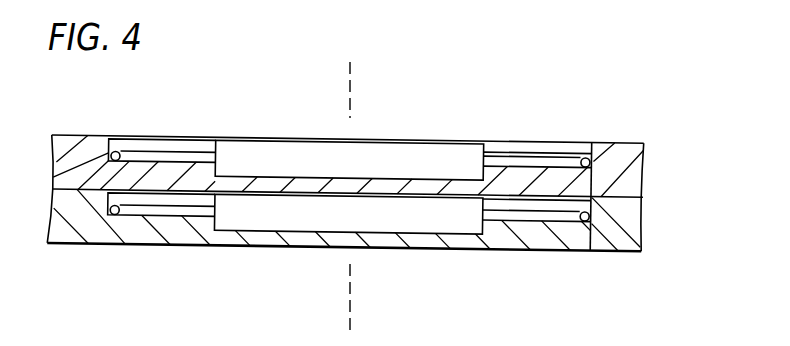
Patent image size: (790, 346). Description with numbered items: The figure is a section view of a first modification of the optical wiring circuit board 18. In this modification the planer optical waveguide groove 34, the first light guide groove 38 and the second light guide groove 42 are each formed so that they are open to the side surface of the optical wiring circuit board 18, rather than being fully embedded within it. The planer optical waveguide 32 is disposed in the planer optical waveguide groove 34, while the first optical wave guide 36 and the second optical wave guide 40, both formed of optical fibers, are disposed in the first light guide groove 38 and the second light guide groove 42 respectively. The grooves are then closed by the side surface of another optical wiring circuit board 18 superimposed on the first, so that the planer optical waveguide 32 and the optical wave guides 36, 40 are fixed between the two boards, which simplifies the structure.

The optical wiring circuit board 18 is at (634, 170).
The planer optical waveguide 32 is at (446, 150).
The planer optical waveguide groove 34 is at (281, 189).
The first optical wave guide 36 is at (188, 143).
The first light guide groove 38 is at (124, 207).
The second optical wave guide 40 is at (556, 149).
The second light guide groove 42 is at (505, 221).